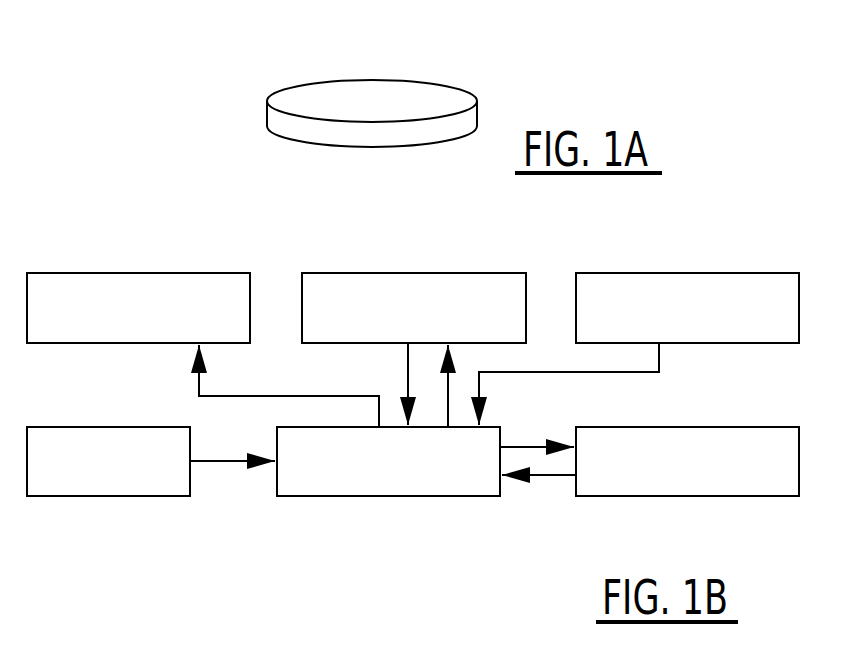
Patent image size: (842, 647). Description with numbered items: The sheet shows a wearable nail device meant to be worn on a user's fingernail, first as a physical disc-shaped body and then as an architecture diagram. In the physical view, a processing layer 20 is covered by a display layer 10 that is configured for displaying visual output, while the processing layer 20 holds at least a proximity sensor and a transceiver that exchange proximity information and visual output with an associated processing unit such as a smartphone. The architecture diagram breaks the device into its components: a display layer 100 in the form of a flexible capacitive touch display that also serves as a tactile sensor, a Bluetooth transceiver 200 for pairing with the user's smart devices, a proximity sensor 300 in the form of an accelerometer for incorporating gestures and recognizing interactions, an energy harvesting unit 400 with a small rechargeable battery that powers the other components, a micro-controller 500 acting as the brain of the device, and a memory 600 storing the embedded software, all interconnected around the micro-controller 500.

In FIG. 1A, the display layer 10 is at (322, 98).
In FIG. 1A, the processing layer 20 is at (305, 136).
In FIG. 1B, the display layer 100 is at (78, 286).
In FIG. 1B, the transceiver 200 is at (330, 286).
In FIG. 1B, the proximity sensor 300 is at (606, 286).
In FIG. 1B, the energy harvesting unit 400 is at (85, 474).
In FIG. 1B, the micro-controller 500 is at (325, 483).
In FIG. 1B, the memory 600 is at (721, 482).